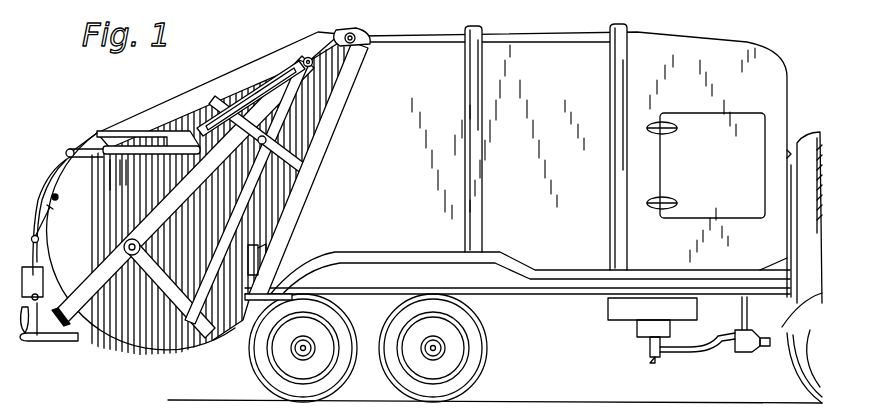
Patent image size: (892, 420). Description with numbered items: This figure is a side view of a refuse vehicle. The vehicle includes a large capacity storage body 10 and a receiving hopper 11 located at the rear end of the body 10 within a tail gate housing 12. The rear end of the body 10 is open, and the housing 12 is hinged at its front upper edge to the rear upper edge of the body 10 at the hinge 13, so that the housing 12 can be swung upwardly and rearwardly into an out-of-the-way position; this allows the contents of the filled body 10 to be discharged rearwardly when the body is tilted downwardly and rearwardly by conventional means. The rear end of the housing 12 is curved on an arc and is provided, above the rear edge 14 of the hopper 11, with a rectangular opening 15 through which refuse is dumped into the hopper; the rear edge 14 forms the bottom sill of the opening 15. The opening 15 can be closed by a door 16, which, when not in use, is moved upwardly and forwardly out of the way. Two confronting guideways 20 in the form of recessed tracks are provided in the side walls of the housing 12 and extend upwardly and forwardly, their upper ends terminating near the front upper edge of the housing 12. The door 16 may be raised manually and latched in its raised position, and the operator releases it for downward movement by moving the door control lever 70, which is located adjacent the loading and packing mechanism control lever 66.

The storage body 10 is at (565, 142).
The receiving hopper 11 is at (137, 345).
The tail gate housing 12 is at (178, 186).
The hinge 13 is at (351, 33).
The rear edge of the hopper 14 is at (28, 272).
The rectangular opening 15 is at (56, 199).
The door 16 is at (52, 173).
The guideways 20 is at (177, 208).
The loading and packing mechanism control lever 66 is at (47, 222).
The door control lever 70 is at (50, 192).